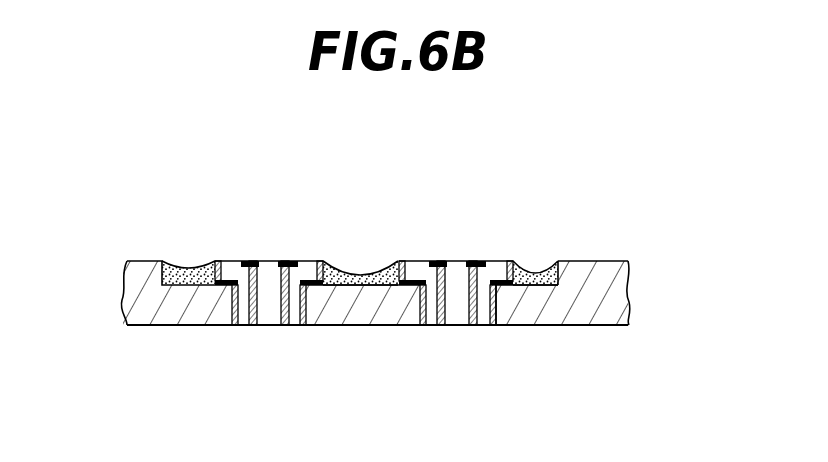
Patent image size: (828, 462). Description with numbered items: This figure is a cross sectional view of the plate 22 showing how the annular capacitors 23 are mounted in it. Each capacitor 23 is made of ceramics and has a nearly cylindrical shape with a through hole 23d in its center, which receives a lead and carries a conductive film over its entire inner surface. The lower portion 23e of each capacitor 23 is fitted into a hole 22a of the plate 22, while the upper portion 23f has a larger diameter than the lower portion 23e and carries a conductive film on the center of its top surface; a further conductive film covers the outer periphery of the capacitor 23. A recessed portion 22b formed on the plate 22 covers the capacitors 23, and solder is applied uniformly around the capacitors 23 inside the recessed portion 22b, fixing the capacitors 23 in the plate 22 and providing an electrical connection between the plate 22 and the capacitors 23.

The plate 22 is at (602, 262).
The hole 22a is at (239, 307).
The recessed portion 22b is at (380, 262).
The capacitor 23 is at (358, 268).
The through hole 23d is at (269, 308).
The lower portion 23e is at (315, 298).
The upper portion 23f is at (333, 262).